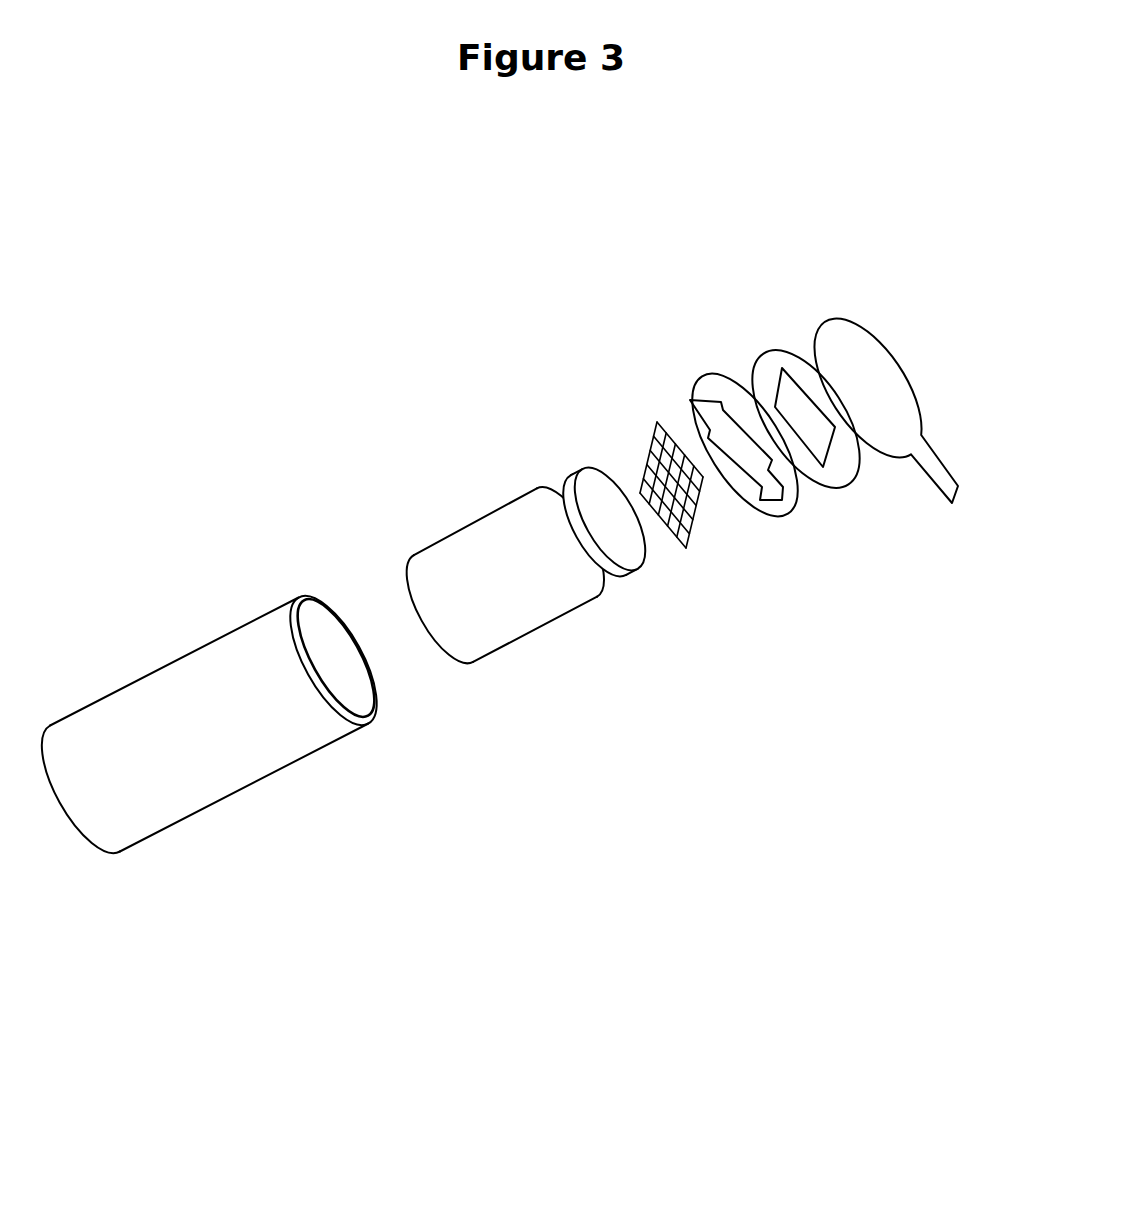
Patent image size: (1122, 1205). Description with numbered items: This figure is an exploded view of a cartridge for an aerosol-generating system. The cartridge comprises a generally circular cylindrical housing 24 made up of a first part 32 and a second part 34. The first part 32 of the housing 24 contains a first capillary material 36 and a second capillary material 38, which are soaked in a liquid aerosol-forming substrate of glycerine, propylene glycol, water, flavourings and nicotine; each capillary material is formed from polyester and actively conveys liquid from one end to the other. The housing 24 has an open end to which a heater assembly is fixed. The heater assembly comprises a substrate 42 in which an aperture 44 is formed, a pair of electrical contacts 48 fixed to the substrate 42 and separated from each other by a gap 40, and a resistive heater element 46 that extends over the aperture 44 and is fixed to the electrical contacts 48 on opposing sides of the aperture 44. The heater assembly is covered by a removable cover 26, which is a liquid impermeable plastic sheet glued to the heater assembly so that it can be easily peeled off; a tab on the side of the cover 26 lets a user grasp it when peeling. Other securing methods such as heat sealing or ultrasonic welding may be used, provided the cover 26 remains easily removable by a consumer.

The housing 24 is at (222, 794).
The cover 26 is at (880, 395).
The first part 32 is at (345, 743).
The second part 34 is at (163, 825).
The first capillary material 36 is at (600, 503).
The second capillary material 38 is at (527, 633).
The gap 40 is at (783, 496).
The substrate 42 is at (797, 449).
The aperture 44 is at (815, 427).
The resistive heater element 46 is at (690, 545).
The electrical contacts 48 is at (705, 477).